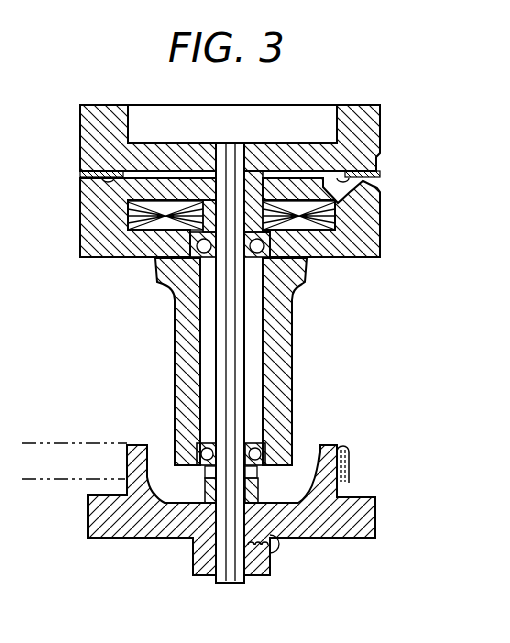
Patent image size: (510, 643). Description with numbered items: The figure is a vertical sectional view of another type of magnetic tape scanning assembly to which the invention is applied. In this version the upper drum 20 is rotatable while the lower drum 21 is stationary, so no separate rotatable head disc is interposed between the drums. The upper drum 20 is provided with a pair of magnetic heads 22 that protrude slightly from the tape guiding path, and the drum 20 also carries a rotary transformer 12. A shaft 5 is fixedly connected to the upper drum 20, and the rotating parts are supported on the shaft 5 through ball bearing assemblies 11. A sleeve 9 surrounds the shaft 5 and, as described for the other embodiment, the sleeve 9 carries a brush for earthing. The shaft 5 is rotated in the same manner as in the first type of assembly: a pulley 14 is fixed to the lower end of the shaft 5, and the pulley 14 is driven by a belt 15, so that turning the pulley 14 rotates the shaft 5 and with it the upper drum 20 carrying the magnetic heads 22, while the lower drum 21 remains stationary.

The shaft 5 is at (243, 578).
The sleeve 9 is at (293, 337).
The ball bearing assemblies 11 is at (300, 266).
The rotary transformer 12 is at (330, 207).
The pulley 14 is at (377, 518).
The belt 15 is at (68, 458).
The upper drum 20 is at (375, 122).
The lower drum 21 is at (374, 250).
The magnetic heads 22 is at (383, 173).